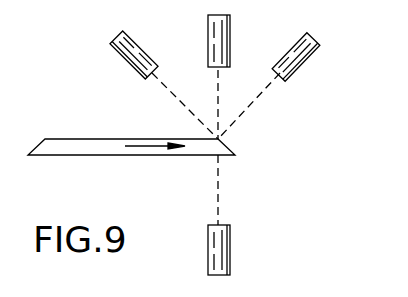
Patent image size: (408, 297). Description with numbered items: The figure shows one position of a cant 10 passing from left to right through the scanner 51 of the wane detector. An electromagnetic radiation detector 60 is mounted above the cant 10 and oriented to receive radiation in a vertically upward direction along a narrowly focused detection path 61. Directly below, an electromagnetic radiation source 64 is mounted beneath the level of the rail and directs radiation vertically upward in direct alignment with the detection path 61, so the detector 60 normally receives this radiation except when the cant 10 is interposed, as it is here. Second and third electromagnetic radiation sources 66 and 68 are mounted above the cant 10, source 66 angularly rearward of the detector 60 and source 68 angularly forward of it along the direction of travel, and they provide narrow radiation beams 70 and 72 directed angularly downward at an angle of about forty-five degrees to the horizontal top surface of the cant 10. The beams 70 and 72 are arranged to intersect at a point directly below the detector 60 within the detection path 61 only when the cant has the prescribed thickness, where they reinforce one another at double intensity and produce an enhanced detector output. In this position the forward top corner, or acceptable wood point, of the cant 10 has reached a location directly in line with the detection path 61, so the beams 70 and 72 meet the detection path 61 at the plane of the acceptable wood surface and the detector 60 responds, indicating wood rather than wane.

The cant 10 is at (68, 152).
The scanner 51 is at (255, 135).
The electromagnetic radiation detector 60 is at (228, 36).
The detection path 61 is at (220, 104).
The electromagnetic radiation source 64 is at (230, 248).
The second electromagnetic radiation source 66 is at (135, 47).
The third electromagnetic radiation source 68 is at (300, 60).
The radiation beam 70 is at (174, 96).
The radiation beam 72 is at (256, 99).